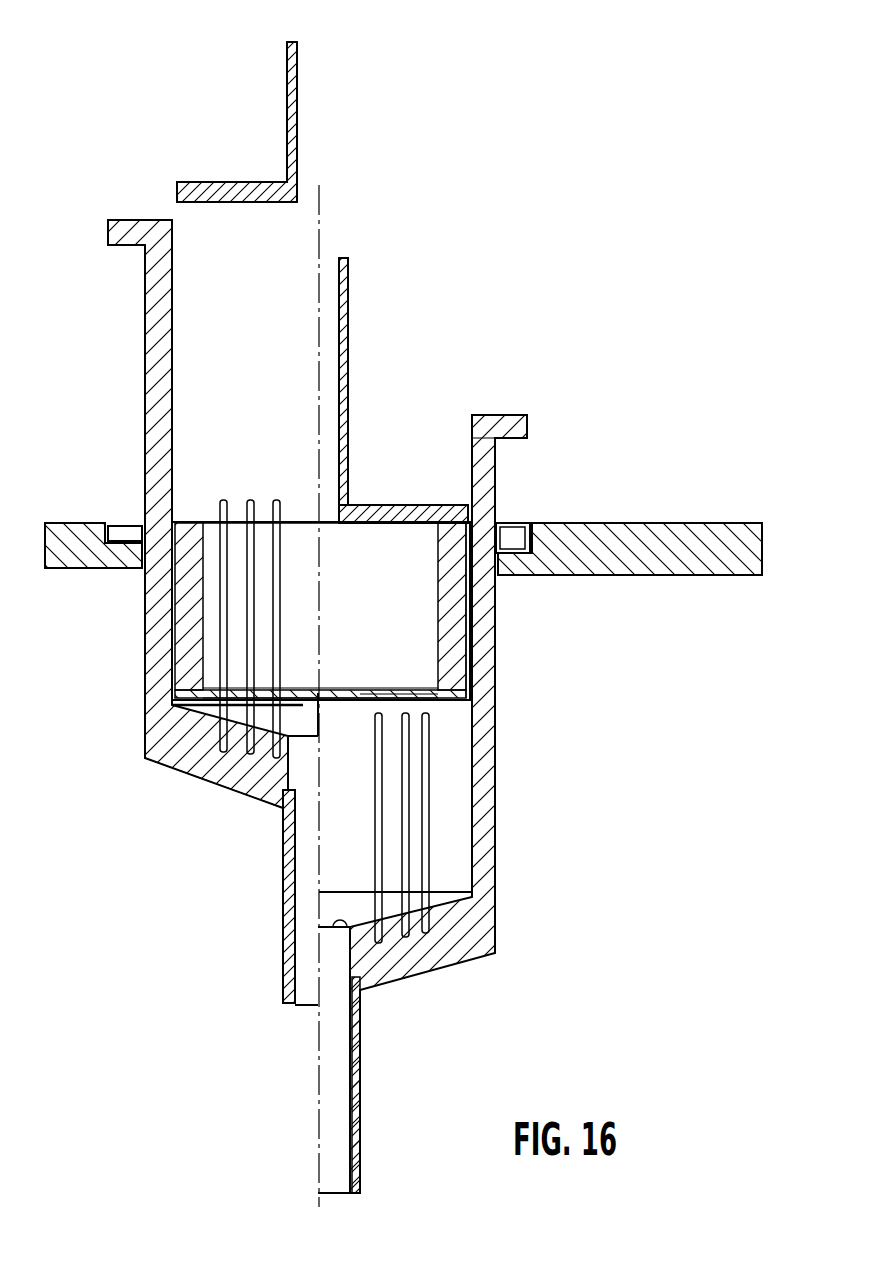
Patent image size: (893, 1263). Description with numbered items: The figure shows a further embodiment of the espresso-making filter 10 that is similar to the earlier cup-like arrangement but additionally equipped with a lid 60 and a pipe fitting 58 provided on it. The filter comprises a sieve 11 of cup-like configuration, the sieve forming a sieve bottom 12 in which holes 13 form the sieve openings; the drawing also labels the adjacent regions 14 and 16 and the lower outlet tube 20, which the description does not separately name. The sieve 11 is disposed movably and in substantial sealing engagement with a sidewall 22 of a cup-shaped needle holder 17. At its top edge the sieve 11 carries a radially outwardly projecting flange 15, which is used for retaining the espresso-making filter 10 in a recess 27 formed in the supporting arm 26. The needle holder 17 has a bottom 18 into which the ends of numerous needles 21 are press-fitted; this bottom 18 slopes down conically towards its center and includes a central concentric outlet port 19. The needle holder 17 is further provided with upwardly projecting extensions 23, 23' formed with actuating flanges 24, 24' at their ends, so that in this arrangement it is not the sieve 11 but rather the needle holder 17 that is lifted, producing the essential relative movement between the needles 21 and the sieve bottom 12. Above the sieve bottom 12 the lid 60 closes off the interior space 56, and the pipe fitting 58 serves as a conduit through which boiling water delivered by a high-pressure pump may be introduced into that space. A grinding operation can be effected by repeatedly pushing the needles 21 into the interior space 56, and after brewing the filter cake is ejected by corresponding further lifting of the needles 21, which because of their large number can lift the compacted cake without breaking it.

The espresso-making filter 10 is at (140, 796).
The sieve 11 is at (423, 648).
The sieve bottom 12 is at (353, 690).
The holes 13 is at (400, 690).
The treatment chamber 14 is at (429, 563).
The flange 15 is at (125, 528).
The insert cup 16 is at (188, 512).
The needle holder 17 is at (458, 826).
The bottom 18 is at (445, 888).
The outlet port 19 is at (355, 928).
The discharge tube 20 is at (358, 1106).
The needles 21 is at (403, 863).
The sidewall 22 is at (472, 755).
The extension 23 is at (447, 804).
The extension 23' is at (203, 514).
The actuating flange 24 is at (495, 401).
The actuating flange 24' is at (107, 260).
The supporting arm 26 is at (662, 543).
The recess 27 is at (105, 518).
The interior space 56 is at (425, 586).
The pipe fitting 58 is at (296, 120).
The lid 60 is at (218, 192).